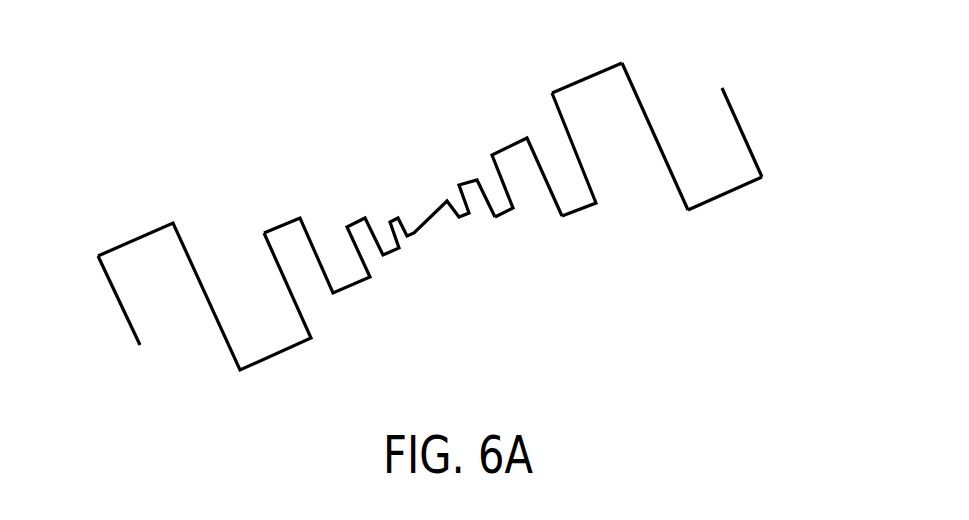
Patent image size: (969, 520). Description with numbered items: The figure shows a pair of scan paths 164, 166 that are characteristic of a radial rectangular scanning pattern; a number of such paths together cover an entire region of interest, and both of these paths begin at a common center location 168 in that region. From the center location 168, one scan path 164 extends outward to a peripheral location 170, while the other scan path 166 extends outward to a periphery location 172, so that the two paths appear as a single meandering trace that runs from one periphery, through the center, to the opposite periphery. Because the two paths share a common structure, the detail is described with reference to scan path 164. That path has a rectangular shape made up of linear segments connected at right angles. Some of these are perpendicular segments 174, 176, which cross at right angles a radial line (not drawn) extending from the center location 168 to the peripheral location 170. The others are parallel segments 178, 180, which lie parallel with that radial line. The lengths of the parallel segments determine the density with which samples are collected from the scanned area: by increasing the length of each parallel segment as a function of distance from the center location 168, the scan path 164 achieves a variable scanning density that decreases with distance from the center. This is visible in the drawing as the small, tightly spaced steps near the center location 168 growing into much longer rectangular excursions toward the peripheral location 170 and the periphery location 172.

The scan path 164 is at (750, 187).
The scan path 166 is at (130, 235).
The center location 168 is at (430, 208).
The peripheral location 170 is at (758, 118).
The periphery location 172 is at (104, 316).
The perpendicular segment 174 is at (542, 162).
The perpendicular segment 176 is at (588, 162).
The parallel segment 178 is at (582, 213).
The parallel segment 180 is at (588, 72).